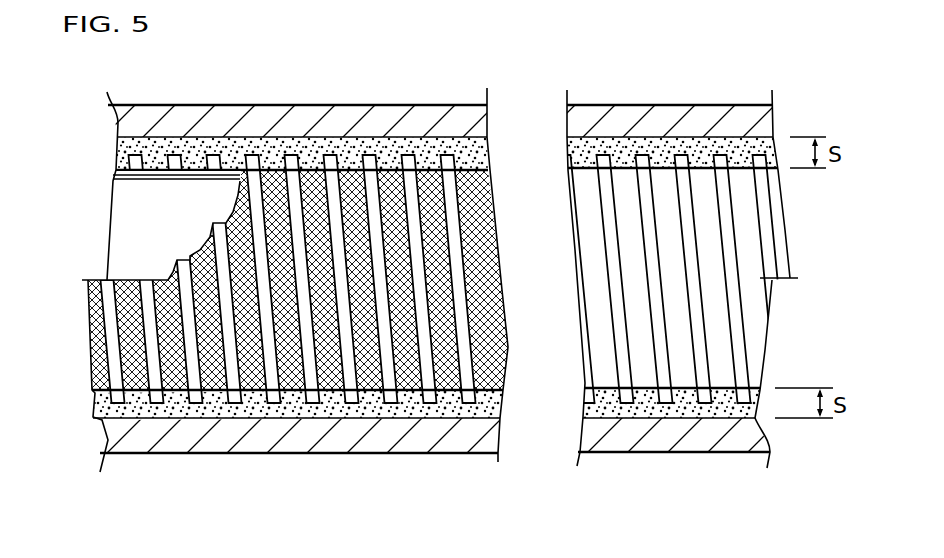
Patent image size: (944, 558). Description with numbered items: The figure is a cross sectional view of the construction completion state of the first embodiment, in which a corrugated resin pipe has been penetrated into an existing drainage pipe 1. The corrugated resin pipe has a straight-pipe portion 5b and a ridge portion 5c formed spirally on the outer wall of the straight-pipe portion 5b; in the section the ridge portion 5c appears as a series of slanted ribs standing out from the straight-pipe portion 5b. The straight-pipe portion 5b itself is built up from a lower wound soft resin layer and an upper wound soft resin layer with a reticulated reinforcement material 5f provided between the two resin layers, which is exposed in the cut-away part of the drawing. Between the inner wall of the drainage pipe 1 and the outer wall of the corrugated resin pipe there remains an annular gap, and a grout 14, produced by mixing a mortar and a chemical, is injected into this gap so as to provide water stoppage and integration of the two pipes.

The drainage pipe 1 is at (428, 117).
The grout 14 is at (667, 148).
The straight-pipe portion 5b is at (385, 167).
The ridge portion 5c is at (327, 162).
The reticulated reinforcement material 5f is at (275, 167).